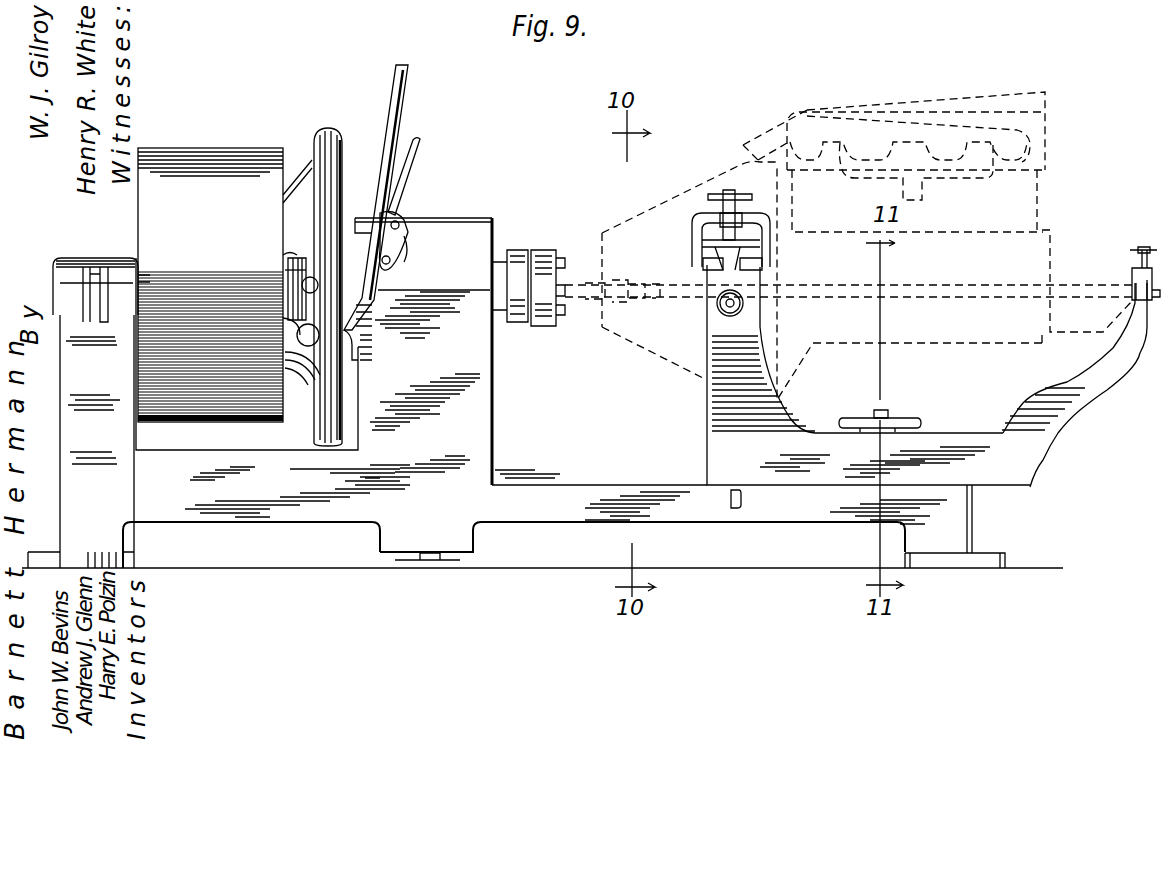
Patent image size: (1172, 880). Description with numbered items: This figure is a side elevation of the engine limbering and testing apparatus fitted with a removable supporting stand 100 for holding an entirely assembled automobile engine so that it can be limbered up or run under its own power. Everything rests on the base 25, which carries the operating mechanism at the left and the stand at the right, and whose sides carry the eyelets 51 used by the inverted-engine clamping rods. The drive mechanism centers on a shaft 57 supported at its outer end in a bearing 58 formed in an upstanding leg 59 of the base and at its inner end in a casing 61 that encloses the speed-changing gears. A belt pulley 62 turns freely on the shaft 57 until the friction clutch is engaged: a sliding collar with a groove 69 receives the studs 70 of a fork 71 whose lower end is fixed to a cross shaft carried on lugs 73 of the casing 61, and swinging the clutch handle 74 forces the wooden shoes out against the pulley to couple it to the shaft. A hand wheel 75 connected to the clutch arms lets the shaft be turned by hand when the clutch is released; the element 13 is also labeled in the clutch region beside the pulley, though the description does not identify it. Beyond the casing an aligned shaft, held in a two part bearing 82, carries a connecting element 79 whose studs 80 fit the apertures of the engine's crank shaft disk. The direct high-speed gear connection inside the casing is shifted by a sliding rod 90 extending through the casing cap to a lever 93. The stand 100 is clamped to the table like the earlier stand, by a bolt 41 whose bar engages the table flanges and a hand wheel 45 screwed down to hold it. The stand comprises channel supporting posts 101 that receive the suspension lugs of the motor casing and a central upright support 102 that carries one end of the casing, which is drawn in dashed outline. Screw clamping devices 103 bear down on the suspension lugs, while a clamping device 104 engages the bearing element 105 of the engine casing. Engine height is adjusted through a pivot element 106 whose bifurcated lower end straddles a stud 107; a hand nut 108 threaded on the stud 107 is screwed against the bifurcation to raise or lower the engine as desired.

The wires 13 is at (286, 358).
The base 25 is at (276, 523).
The bolt 41 is at (882, 410).
The hand wheel 45 is at (903, 420).
The eyelet 51 is at (741, 497).
The shaft 57 is at (140, 282).
The bearing 58 is at (78, 260).
The upstanding leg 59 is at (62, 378).
The casing 61 is at (492, 367).
The pulley 62 is at (222, 138).
The groove 69 is at (290, 256).
The studs 70 is at (300, 286).
The fork 71 is at (296, 328).
The lugs 73 is at (355, 348).
The clutch handle 74 is at (398, 92).
The hand wheel 75 is at (336, 120).
The connecting element 79 is at (543, 252).
The studs 80 is at (560, 262).
The two part bearing 82 is at (515, 252).
The sliding rod 90 is at (408, 228).
The lever 93 is at (415, 182).
The removable supporting stand 100 is at (707, 452).
The channel supporting posts 101 is at (716, 352).
The central upright support 102 is at (1105, 376).
The screw clamping devices 103 is at (727, 190).
The clamping device 104 is at (1138, 270).
The bearing element 105 is at (1140, 297).
The pivot element 106 is at (703, 258).
The stud 107 is at (727, 303).
The hand nut 108 is at (722, 314).